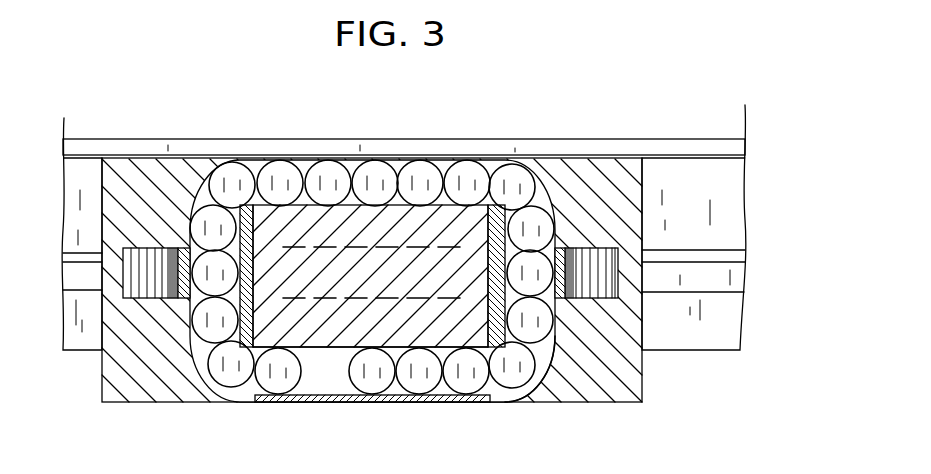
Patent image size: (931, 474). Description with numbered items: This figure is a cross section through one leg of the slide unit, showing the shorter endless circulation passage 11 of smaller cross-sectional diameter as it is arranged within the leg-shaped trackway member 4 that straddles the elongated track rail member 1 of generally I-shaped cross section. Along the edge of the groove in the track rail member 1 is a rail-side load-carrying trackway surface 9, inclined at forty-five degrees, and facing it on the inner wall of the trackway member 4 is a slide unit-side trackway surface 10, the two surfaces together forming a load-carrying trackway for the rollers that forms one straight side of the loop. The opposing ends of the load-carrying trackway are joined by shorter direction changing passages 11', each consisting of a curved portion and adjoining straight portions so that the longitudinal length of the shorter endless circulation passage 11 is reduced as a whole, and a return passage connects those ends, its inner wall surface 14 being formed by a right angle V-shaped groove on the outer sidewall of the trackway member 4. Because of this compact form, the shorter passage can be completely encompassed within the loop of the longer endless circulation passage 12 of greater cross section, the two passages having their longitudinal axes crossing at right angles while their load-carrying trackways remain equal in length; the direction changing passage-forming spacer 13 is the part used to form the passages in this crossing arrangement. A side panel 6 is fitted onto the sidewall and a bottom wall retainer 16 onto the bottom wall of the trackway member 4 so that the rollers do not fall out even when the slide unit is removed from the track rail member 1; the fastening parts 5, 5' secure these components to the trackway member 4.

The track rail member 1 is at (737, 147).
The trackway member 4 is at (458, 330).
The fastening bolt 5 is at (300, 199).
The fastening bolt 5' is at (591, 199).
The side panel 6 is at (630, 200).
The load-carrying trackway surface 9 is at (168, 157).
The trackway surface 10 is at (358, 183).
The shorter endless circulation passage 11 is at (372, 250).
The shorter direction changing passage 11' is at (560, 386).
The longer endless circulation passage 12 is at (610, 333).
The direction changing passage-forming spacer 13 is at (245, 337).
The innerwall surface of roller return passage 14 is at (307, 380).
The bottom wall retainer 16 is at (316, 402).